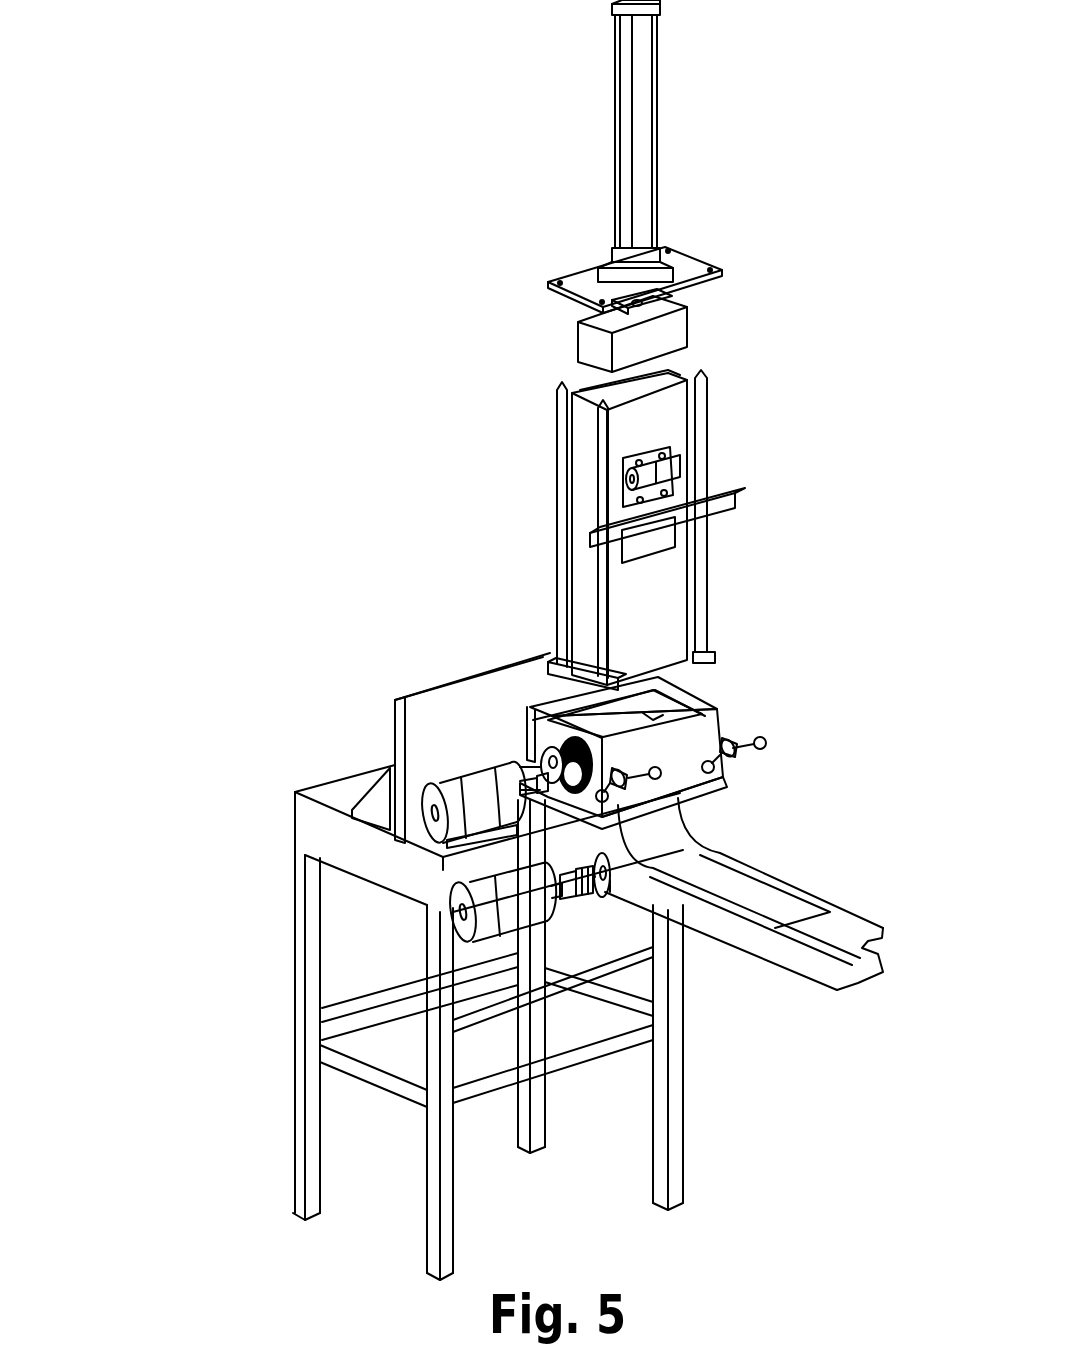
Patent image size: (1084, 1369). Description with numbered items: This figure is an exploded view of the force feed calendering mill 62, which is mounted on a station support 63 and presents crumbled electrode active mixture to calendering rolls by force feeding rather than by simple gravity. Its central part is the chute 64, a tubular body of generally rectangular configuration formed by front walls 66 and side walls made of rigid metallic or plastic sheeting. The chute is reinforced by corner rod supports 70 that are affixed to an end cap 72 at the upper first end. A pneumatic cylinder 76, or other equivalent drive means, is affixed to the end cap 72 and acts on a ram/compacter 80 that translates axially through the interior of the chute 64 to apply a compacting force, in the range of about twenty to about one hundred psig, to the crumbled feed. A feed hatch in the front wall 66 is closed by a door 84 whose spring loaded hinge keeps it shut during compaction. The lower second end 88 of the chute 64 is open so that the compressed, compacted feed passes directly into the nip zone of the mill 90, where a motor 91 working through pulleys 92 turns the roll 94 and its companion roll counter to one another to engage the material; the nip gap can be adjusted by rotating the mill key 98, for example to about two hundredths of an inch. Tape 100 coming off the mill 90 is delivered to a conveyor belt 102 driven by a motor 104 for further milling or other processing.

The force feed calendering mill 62 is at (431, 237).
The station support 63 is at (320, 833).
The chute 64 is at (556, 488).
The front walls 66 is at (635, 608).
The corner rod supports 70 is at (710, 410).
The end cap 72 is at (700, 255).
The pneumatic cylinder 76 is at (625, 105).
The ram/compacter 80 is at (670, 330).
The door 84 is at (668, 535).
The lower second end 88 is at (660, 673).
The mill 90 is at (722, 730).
The motor 91 is at (405, 698).
The pulleys 92 is at (481, 787).
The roll 94 is at (655, 712).
The mill key 98 is at (760, 749).
The tape 100 is at (690, 863).
The conveyor belt 102 is at (722, 926).
The motor 104 is at (500, 912).